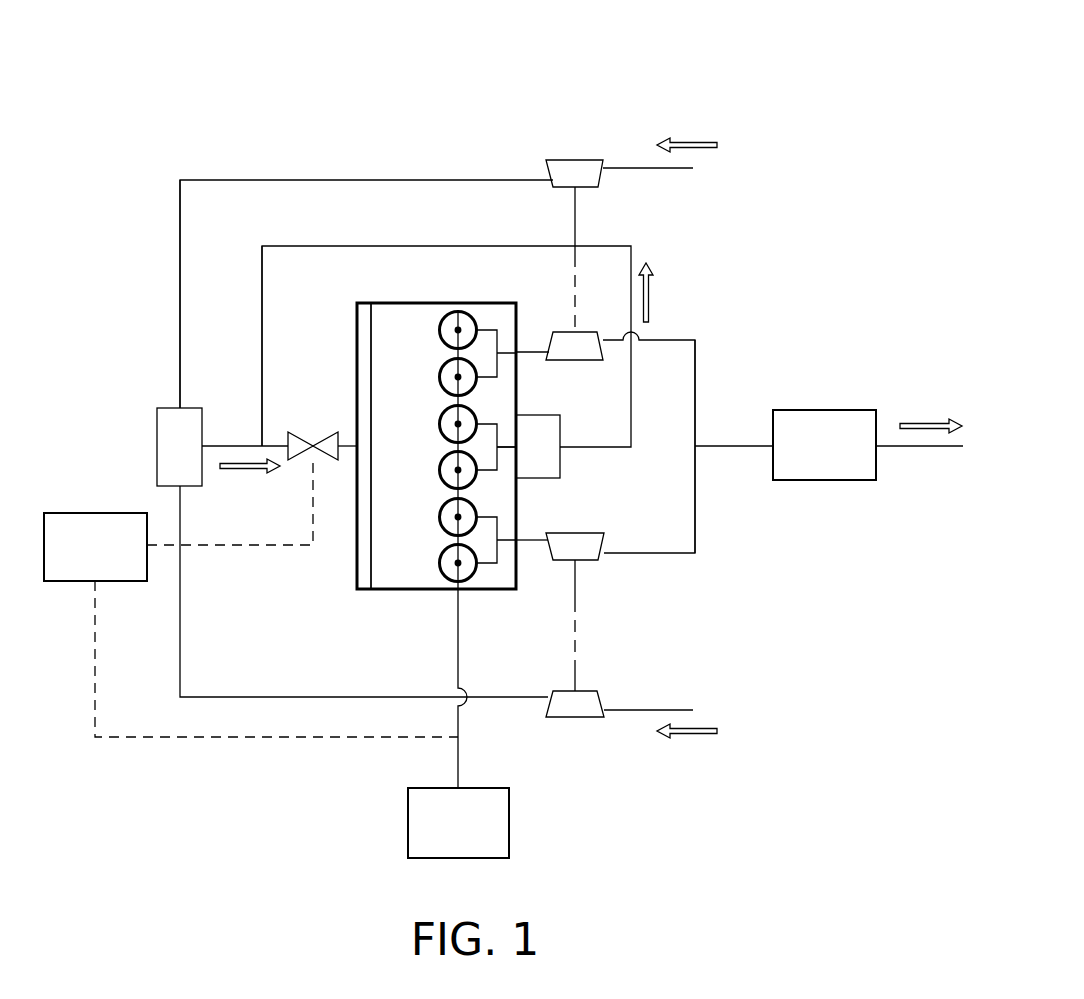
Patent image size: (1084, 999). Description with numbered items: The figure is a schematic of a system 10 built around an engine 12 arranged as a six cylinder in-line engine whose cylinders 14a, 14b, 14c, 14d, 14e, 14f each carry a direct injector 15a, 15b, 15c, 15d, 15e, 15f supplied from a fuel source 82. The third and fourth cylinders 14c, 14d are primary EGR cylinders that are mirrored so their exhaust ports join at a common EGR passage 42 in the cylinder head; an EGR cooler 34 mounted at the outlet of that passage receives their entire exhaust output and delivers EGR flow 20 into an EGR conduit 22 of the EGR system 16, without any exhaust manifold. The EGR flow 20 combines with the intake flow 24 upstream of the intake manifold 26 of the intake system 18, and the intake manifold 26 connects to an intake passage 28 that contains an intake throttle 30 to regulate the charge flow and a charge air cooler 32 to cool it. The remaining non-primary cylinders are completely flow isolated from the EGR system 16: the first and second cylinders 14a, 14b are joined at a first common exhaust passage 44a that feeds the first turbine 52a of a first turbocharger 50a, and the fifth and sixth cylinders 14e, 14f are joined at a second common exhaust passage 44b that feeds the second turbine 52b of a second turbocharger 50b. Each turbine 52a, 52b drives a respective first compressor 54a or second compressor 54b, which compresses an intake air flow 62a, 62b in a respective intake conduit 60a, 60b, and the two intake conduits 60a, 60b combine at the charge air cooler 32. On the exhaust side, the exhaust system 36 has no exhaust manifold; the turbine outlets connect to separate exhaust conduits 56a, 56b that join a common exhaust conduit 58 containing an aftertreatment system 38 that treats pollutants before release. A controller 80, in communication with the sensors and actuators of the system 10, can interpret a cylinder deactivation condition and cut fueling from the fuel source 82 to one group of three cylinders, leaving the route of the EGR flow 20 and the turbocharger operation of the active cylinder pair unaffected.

The system 10 is at (240, 88).
The engine 12 is at (383, 592).
The cylinder 14a is at (462, 312).
The cylinder 14b is at (441, 365).
The cylinder 14c is at (441, 432).
The cylinder 14d is at (442, 462).
The cylinder 14e is at (441, 530).
The cylinder 14f is at (471, 580).
The direct injector 15a is at (458, 330).
The direct injector 15b is at (458, 377).
The direct injector 15c is at (458, 424).
The direct injector 15d is at (458, 470).
The direct injector 15e is at (458, 517).
The direct injector 15f is at (458, 563).
The EGR system 16 is at (296, 253).
The intake system 18 is at (172, 312).
The EGR flow 20 is at (650, 292).
The EGR conduit 22 is at (632, 250).
The intake flow 24 is at (245, 470).
The intake manifold 26 is at (362, 563).
The intake passage 28 is at (232, 445).
The intake throttle 30 is at (302, 432).
The charge air cooler 32 is at (157, 438).
The EGR cooler 34 is at (560, 430).
The exhaust system 36 is at (722, 350).
The aftertreatment system 38 is at (868, 445).
The common EGR passage 42 is at (505, 452).
The first common exhaust passage 44a is at (533, 352).
The second common exhaust passage 44b is at (534, 542).
The first turbocharger 50a is at (563, 218).
The second turbocharger 50b is at (596, 642).
The first turbine 52a is at (585, 330).
The second turbine 52b is at (590, 562).
The first compressor 54a is at (568, 160).
The second compressor 54b is at (568, 718).
The exhaust conduit 56a is at (697, 338).
The exhaust conduit 56b is at (650, 552).
The common exhaust conduit 58 is at (740, 447).
The intake conduit 60a is at (357, 180).
The intake conduit 60b is at (238, 697).
The intake air flow 62a is at (693, 145).
The intake air flow 62b is at (695, 735).
The controller 80 is at (251, 598).
The fuel source 82 is at (458, 823).